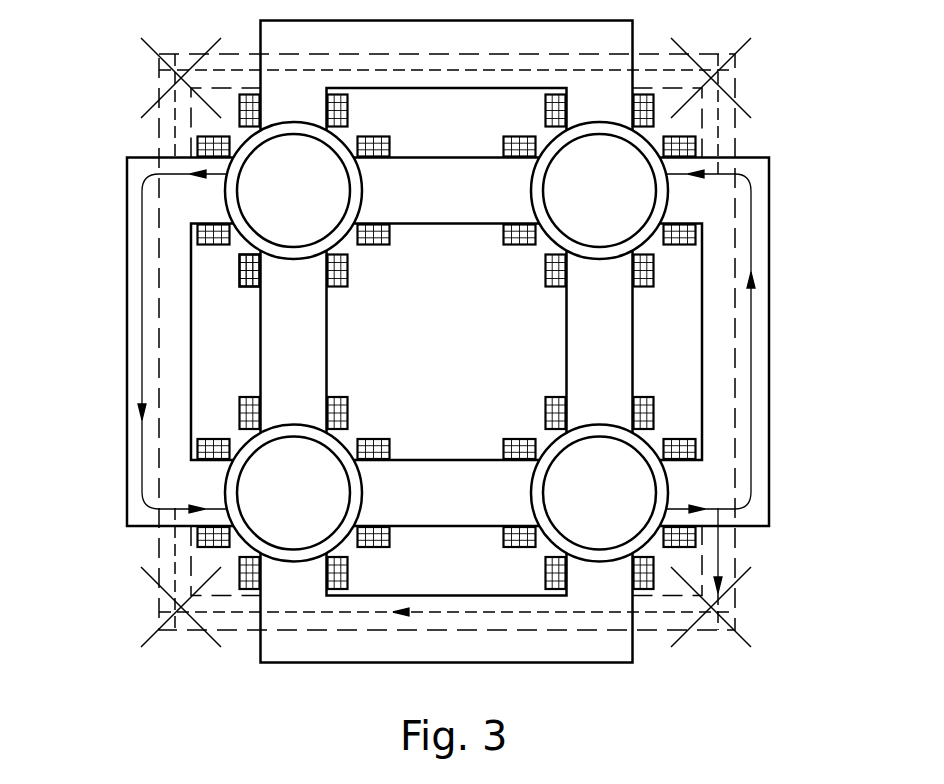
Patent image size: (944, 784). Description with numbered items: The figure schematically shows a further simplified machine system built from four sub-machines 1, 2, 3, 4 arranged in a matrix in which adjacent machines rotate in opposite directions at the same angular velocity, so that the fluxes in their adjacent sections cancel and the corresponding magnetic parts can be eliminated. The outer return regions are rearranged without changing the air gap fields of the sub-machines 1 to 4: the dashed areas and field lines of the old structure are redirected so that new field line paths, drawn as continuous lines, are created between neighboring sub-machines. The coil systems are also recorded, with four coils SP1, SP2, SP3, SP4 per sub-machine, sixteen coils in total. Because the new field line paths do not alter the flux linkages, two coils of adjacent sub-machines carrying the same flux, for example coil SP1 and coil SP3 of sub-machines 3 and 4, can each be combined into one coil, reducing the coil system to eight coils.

The sub-machine 1 is at (538, 430).
The sub-machine 2 is at (538, 253).
The sub-machine 3 is at (360, 253).
The sub-machine 4 is at (355, 430).
The coil SP1 is at (347, 103).
The coil SP2 is at (389, 232).
The coil SP3 is at (250, 286).
The coil SP4 is at (196, 228).